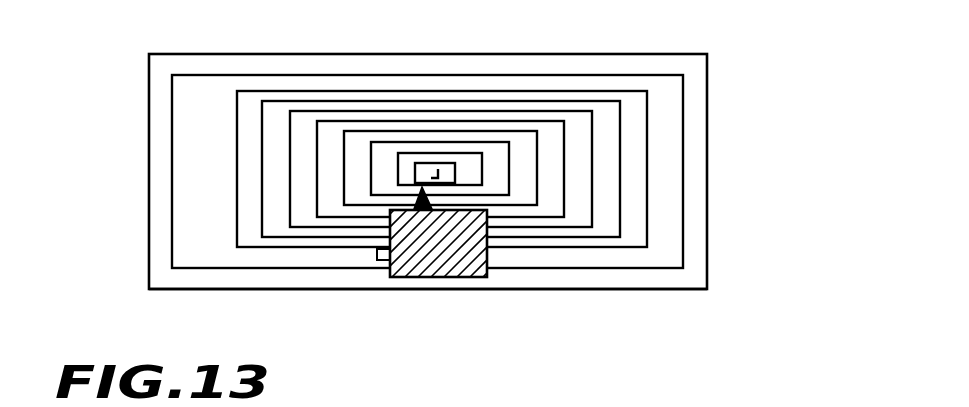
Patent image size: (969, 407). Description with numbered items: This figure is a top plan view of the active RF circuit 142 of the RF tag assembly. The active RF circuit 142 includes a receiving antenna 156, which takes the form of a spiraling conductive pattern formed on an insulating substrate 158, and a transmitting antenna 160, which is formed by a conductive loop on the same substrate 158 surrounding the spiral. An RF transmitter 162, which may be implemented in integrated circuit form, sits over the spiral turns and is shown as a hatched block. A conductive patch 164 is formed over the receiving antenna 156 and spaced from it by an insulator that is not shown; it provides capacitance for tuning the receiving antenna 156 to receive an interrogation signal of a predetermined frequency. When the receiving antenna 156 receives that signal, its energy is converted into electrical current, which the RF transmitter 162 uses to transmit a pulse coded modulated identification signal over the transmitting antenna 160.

The active RF circuit 142 is at (633, 55).
The receiving antenna 156 is at (647, 110).
The insulating substrate 158 is at (583, 283).
The transmitting antenna 160 is at (244, 268).
The RF transmitter 162 is at (472, 270).
The conductive patch 164 is at (422, 187).